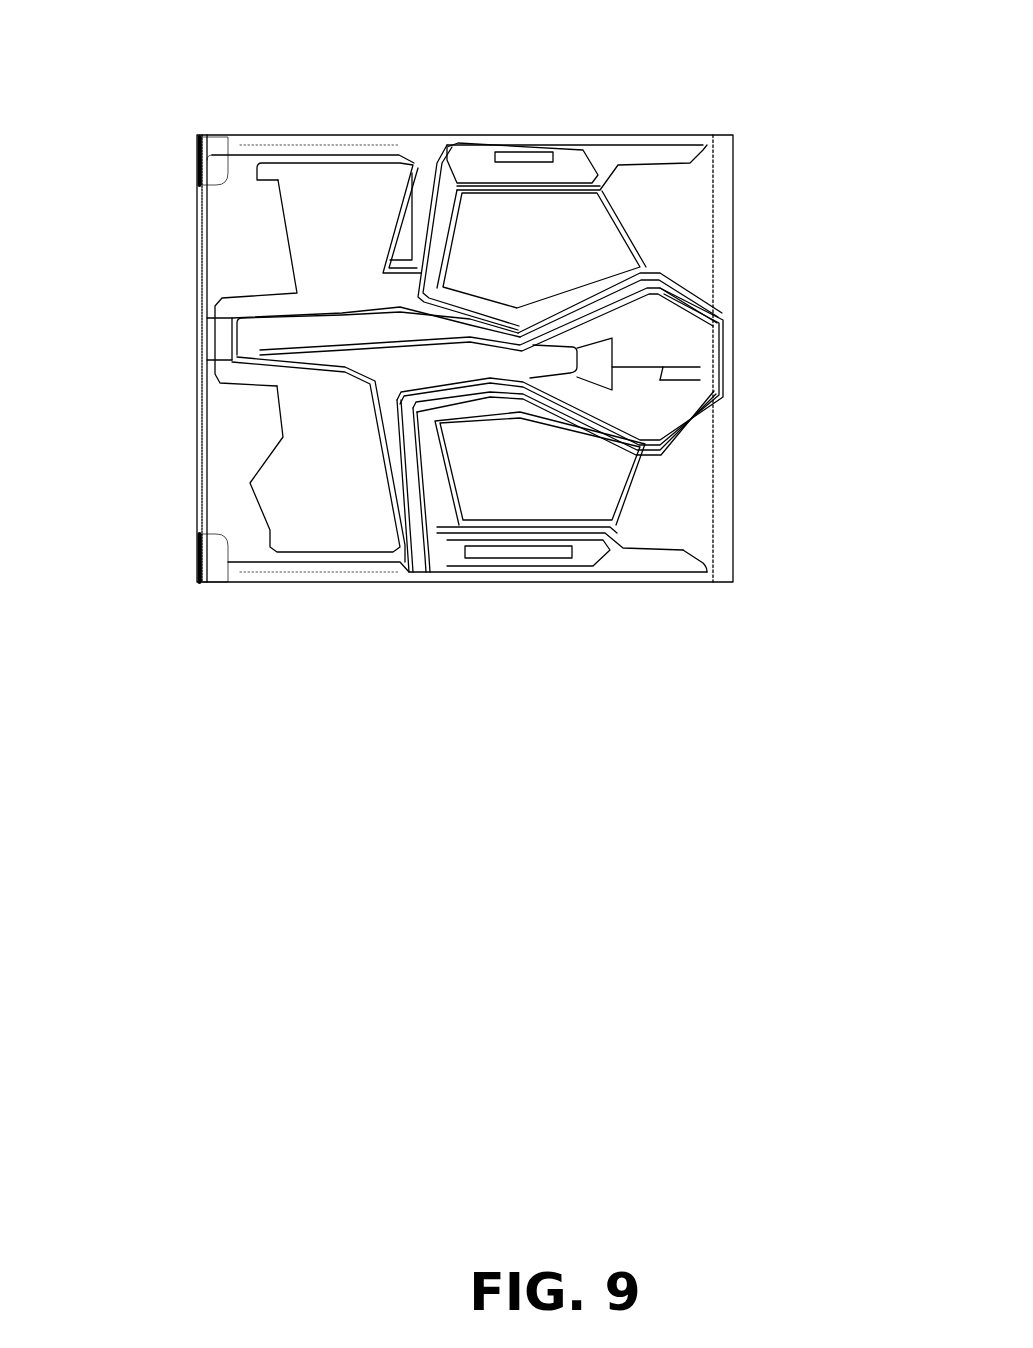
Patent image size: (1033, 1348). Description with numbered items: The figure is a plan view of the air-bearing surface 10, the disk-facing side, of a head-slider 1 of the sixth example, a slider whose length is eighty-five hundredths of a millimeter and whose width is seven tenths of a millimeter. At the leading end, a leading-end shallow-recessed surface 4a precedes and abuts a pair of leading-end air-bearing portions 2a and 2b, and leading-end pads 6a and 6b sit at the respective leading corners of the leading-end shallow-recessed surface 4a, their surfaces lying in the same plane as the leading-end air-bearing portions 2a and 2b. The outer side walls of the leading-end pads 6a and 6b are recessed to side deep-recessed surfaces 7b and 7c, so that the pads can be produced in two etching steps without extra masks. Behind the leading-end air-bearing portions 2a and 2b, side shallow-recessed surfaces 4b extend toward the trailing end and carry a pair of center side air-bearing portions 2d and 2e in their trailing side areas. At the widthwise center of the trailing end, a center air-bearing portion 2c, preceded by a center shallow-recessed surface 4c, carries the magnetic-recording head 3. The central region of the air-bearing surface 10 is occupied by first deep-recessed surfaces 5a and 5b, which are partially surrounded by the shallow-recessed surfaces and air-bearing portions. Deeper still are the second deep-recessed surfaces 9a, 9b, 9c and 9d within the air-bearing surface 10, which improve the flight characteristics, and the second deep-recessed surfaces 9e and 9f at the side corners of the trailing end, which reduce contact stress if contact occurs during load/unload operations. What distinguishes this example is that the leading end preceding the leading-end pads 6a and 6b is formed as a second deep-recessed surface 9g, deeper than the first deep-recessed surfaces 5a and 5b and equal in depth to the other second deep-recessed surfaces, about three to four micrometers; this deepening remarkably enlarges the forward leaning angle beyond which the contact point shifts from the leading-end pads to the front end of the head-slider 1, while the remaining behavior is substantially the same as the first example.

The head-slider 1 is at (257, 140).
The leading-end air-bearing portion 2a is at (342, 223).
The leading-end air-bearing portion 2b is at (315, 527).
The center air-bearing portion 2c is at (693, 330).
The center side air-bearing portion 2d is at (573, 162).
The center side air-bearing portion 2e is at (582, 557).
The magnetic-recording head 3 is at (713, 350).
The leading-end shallow-recessed surface 4a is at (235, 463).
The side shallow-recessed surface 4b is at (618, 155).
The center shallow-recessed surface 4c is at (650, 322).
The first deep-recessed surface 5a is at (672, 197).
The first deep-recessed surface 5b is at (693, 465).
The leading-end pad 6a is at (215, 173).
The leading-end pad 6b is at (217, 543).
The side deep-recessed surface 7b is at (265, 582).
The side deep-recessed surface 7c is at (247, 148).
The second deep-recessed surface 9a is at (423, 187).
The second deep-recessed surface 9b is at (375, 353).
The second deep-recessed surface 9c is at (598, 247).
The second deep-recessed surface 9d is at (607, 477).
The second deep-recessed surface 9e is at (720, 150).
The second deep-recessed surface 9f is at (700, 583).
The second deep-recessed surface 9g is at (198, 323).
The air-bearing surface 10 is at (317, 183).